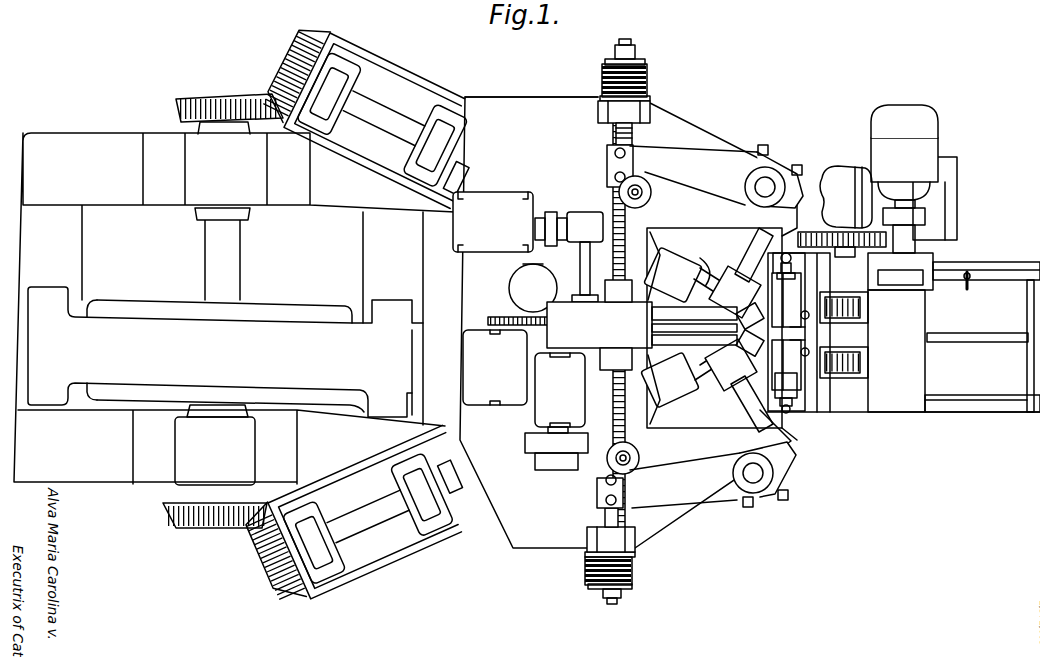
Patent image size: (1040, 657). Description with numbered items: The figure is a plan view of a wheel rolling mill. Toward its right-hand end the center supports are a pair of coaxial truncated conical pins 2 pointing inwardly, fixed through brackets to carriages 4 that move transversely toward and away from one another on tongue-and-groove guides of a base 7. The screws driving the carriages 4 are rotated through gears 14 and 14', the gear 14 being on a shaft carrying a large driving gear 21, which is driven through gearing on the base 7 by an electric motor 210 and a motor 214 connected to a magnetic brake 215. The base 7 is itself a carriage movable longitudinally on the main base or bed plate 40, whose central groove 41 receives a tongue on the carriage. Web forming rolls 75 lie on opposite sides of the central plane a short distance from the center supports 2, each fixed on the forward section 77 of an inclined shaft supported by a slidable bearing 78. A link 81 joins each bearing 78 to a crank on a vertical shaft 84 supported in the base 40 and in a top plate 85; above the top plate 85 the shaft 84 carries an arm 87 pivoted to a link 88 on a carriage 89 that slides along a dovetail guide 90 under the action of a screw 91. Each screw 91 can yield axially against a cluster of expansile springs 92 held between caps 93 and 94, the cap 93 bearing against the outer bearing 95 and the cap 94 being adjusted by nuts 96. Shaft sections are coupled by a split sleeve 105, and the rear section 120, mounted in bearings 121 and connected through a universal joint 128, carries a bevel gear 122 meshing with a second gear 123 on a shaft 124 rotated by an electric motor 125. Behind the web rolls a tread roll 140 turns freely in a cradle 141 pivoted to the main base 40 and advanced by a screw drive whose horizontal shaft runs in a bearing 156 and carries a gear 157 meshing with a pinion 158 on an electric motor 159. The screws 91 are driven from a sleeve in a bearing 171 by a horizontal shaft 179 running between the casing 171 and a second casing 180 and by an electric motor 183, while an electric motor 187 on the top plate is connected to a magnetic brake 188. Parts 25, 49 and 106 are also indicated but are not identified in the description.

The pins 2 is at (786, 333).
The carriages 4 is at (798, 260).
The base 7 is at (905, 398).
The gear 14 is at (859, 309).
The gear 14' is at (862, 365).
The driving gear 21 is at (836, 174).
The pin 25 is at (790, 332).
The main base 40 is at (513, 103).
The central groove 41 is at (972, 342).
The stop 49 is at (990, 406).
The web forming rolls 75 is at (750, 330).
The forward shaft section 77 is at (708, 265).
The slidable bearing 78 is at (733, 328).
The link 81 is at (760, 249).
The vertical shaft 84 is at (762, 192).
The top plate 85 is at (547, 97).
The arm 87 is at (690, 163).
The link 88 is at (607, 165).
The carriage 89 is at (612, 178).
The dovetail guide 90 is at (635, 137).
The screws 91 is at (627, 220).
The expansile springs 92 is at (648, 78).
The cap 93 is at (602, 97).
The cap 94 is at (633, 62).
The outer bearing 95 is at (598, 109).
The nuts 96 is at (619, 45).
The split sleeve 105 is at (672, 328).
The window frame 106 is at (683, 228).
The rear shaft section 120 is at (378, 108).
The bearings 121 is at (410, 152).
The bevel gear 122 is at (300, 36).
The gear 123 is at (212, 98).
The shaft 124 is at (242, 265).
The electric motor 125 is at (140, 318).
The universal joint 128 is at (470, 150).
The tread roll 140 is at (708, 332).
The cradle 141 is at (698, 352).
The bearing 156 is at (533, 288).
The gear 157 is at (550, 320).
The pinion 158 is at (491, 317).
The electric motor 159 is at (495, 367).
The bearing casing 171 is at (599, 325).
The horizontal shaft 179 is at (582, 262).
The casing 180 is at (569, 229).
The electric motor 183 is at (493, 222).
The electric motor 187 is at (560, 390).
The magnetic brake 188 is at (540, 440).
The electric motor 210 is at (862, 170).
The motor 214 is at (914, 172).
The magnetic brake 215 is at (920, 262).